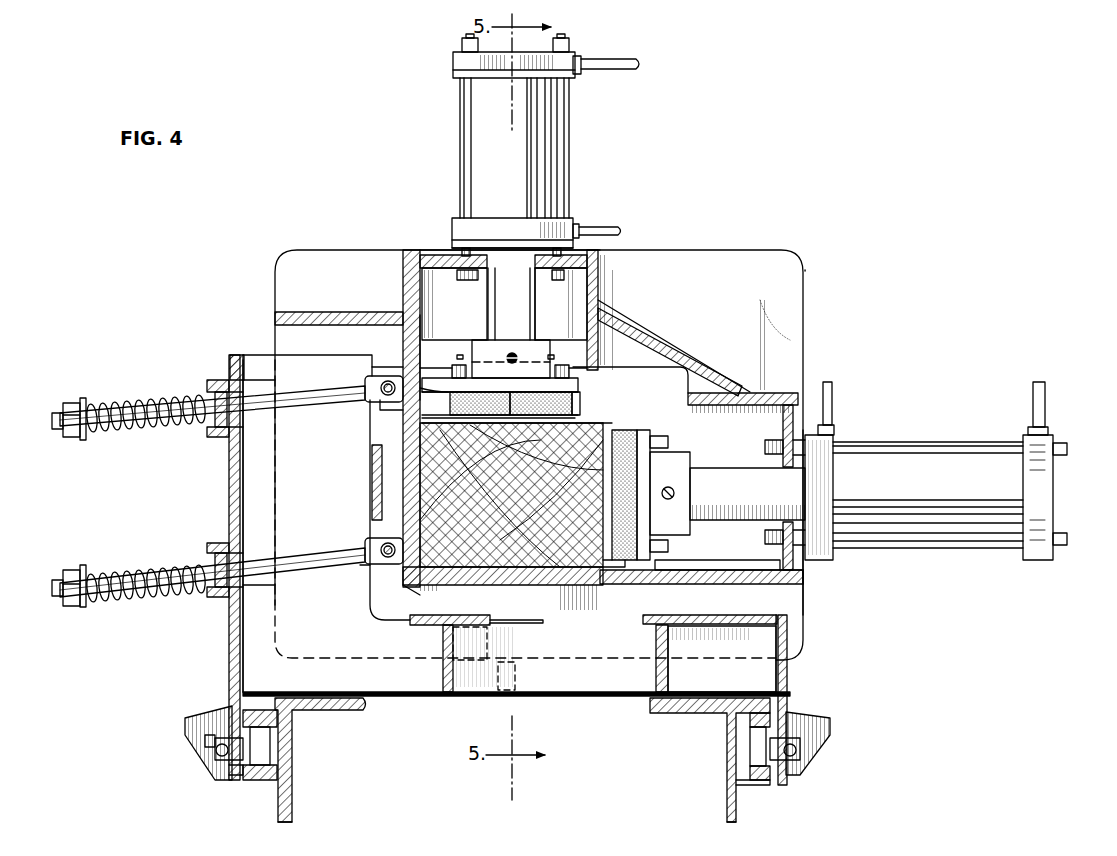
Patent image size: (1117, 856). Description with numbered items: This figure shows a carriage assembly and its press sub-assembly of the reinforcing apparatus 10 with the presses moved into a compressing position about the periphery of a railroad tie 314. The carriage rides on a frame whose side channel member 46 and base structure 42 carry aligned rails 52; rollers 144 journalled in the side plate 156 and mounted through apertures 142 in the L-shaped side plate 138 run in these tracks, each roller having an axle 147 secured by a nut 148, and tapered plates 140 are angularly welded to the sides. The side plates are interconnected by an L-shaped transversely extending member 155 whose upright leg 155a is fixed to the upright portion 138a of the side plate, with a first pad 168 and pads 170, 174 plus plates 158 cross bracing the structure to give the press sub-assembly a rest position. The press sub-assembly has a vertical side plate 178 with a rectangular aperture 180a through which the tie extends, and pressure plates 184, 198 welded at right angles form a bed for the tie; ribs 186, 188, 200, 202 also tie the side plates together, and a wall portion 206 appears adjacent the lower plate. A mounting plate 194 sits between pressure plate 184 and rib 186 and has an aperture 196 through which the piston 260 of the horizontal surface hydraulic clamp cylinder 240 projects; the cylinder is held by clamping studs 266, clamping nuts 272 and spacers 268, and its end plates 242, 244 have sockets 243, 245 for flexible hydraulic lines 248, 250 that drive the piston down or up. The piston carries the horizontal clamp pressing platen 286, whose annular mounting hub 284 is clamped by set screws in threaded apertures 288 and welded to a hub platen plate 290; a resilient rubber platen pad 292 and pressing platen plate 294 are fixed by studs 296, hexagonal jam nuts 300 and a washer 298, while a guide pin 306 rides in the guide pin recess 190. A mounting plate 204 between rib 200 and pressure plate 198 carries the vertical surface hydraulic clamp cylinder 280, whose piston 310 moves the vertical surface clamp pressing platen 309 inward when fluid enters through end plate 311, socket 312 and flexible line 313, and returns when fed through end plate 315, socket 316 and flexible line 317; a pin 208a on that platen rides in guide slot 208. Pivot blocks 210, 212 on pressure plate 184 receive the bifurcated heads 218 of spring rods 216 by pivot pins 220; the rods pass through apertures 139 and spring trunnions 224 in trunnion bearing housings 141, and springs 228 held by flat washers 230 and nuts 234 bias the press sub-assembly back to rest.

The reinforcing apparatus 10 is at (790, 165).
The base plate 42 is at (433, 720).
The side channel member 46 is at (292, 790).
The rails 52 is at (262, 712).
The L-shaped side plate 138 is at (240, 497).
The upright portion 138a is at (232, 358).
The apertures 139 is at (258, 375).
The tapered plate 140 is at (200, 708).
The trunnion bearing housing 141 is at (228, 437).
The apertures 142 is at (228, 770).
The rollers 144 is at (724, 785).
The axles 147 is at (210, 752).
The nuts 148 is at (210, 730).
The transversely extending member 155 is at (376, 612).
The upright leg 155a is at (335, 441).
The side plate 156 is at (787, 680).
The plates 158 is at (443, 662).
The first pad 168 is at (372, 470).
The pad 170 is at (430, 628).
The pad 174 is at (720, 625).
The vertical side plate 178 is at (795, 315).
The rectangular aperture 180a is at (655, 367).
The pressure plate 184 is at (403, 270).
The rib 186 is at (598, 280).
The rib 188 is at (320, 312).
The guide pin recess 190 is at (403, 315).
The mounting plate 194 is at (580, 252).
The aperture 196 is at (552, 252).
The pressure plate 198 is at (530, 585).
The rib 200 is at (762, 392).
The rib 202 is at (662, 345).
The mounting plate 204 is at (785, 415).
The right wall 206 is at (786, 583).
The guide slot 208 is at (710, 583).
The pin 208a is at (660, 568).
The pivot block 210 is at (393, 370).
The pivot block 212 is at (383, 572).
The spring rod 216 is at (48, 430).
The bifurcated head 218 is at (365, 380).
The pivot pin 220 is at (370, 376).
The spring trunnion 224 is at (210, 386).
The spring 228 is at (168, 432).
The flat washer 230 is at (84, 400).
The nut 234 is at (68, 402).
The horizontal surface hydraulic clamp cylinder 240 is at (450, 157).
The end plate 242 is at (483, 80).
The socket 243 is at (580, 76).
The end plate 244 is at (560, 225).
The socket 245 is at (575, 222).
The flexible hydraulic line 248 is at (618, 60).
The flexible hydraulic line 250 is at (620, 228).
The piston 260 is at (487, 297).
The clamping studs 266 is at (552, 278).
The spacers 268 is at (445, 252).
The clamping nuts 272 is at (465, 46).
The vertical surface hydraulic clamp cylinder 280 is at (960, 425).
The annular mounting hub 284 is at (540, 335).
The horizontal clamp pressing platen 286 is at (580, 410).
The threaded apertures 288 is at (512, 352).
The hub platen plate 290 is at (580, 390).
The resilient rubber platen pad 292 is at (450, 400).
The pressing platen plate 294 is at (575, 423).
The studs 296 is at (462, 355).
The washer 298 is at (512, 407).
The hexagonal jam nuts 300 is at (455, 372).
The guide pin 306 is at (458, 404).
The vertical surface clamp pressing platen 309 is at (625, 565).
The piston 310 is at (722, 490).
The end plate 311 is at (1048, 490).
The socket 312 is at (1050, 432).
The flexible line 313 is at (1042, 402).
The railroad tie 314 is at (528, 503).
The end plate 315 is at (822, 496).
The socket 316 is at (832, 432).
The flexible line 317 is at (838, 405).